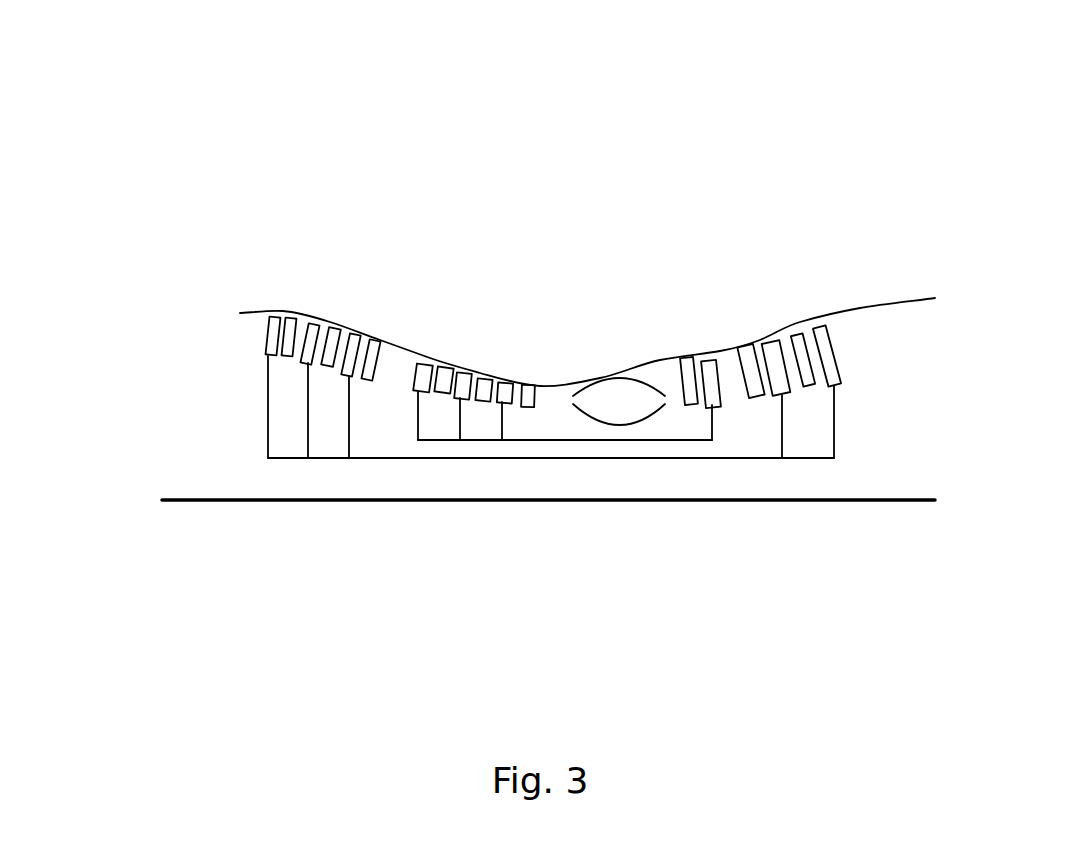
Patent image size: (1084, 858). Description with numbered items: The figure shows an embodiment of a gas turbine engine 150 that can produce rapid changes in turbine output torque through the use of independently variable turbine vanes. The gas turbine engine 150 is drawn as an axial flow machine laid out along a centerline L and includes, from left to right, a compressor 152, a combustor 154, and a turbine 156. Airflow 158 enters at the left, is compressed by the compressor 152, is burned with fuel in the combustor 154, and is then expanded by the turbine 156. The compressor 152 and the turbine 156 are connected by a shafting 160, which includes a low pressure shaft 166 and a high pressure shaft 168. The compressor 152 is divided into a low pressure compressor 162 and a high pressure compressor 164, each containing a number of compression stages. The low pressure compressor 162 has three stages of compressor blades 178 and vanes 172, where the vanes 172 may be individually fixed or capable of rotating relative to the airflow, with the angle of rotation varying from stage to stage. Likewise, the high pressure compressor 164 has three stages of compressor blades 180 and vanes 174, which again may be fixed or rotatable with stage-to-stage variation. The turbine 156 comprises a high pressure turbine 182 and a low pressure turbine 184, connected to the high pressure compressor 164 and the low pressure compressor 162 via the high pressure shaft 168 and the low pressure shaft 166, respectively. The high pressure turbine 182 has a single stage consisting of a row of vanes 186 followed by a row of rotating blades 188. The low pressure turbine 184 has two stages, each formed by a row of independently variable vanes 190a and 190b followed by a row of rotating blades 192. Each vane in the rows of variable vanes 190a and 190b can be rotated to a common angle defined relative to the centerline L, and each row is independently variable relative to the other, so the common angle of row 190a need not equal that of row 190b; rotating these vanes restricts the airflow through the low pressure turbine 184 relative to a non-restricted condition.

The gas turbine engine 150 is at (318, 606).
The compressor 152 is at (411, 255).
The combustor 154 is at (628, 380).
The turbine 156 is at (809, 138).
The airflow 158 is at (118, 402).
The shafting 160 is at (560, 478).
The low pressure compressor 162 is at (346, 252).
The high pressure compressor 164 is at (511, 225).
The low pressure shaft 166 is at (416, 460).
The high pressure shaft 168 is at (652, 440).
The vanes 172 is at (296, 316).
The vanes 174 is at (448, 365).
The compressor blades 178 is at (267, 360).
The compressor blades 180 is at (416, 393).
The high pressure turbine 182 is at (733, 247).
The low pressure turbine 184 is at (818, 222).
The vanes 186 is at (690, 357).
The rotating blades 188 is at (718, 405).
The independently variable vanes 190a is at (748, 345).
The independently variable vanes 190b is at (798, 330).
The rotating blades 192 is at (788, 397).
The centerline L is at (783, 500).